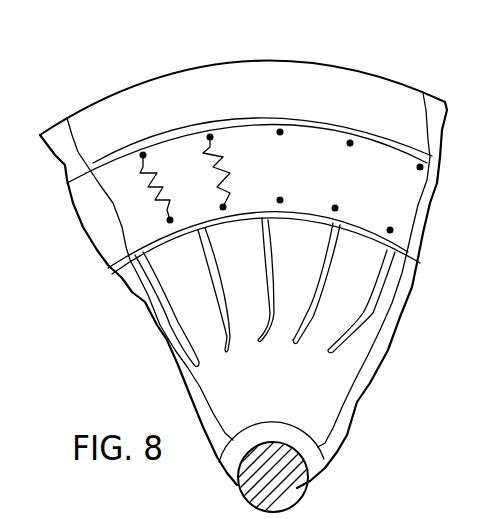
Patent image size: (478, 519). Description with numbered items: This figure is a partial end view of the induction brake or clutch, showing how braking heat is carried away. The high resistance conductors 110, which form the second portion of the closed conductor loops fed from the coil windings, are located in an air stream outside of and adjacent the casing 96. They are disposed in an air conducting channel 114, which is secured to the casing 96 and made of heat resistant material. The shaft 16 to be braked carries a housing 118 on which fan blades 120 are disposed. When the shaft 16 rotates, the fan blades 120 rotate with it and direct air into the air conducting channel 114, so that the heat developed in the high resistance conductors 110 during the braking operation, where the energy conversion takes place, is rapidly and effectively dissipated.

The casing 96 is at (355, 78).
The high resistance conductors 110 is at (200, 157).
The air conducting channel 114 is at (420, 233).
The housing 118 is at (330, 400).
The fan blades 120 is at (170, 310).
The shaft 16 is at (292, 498).